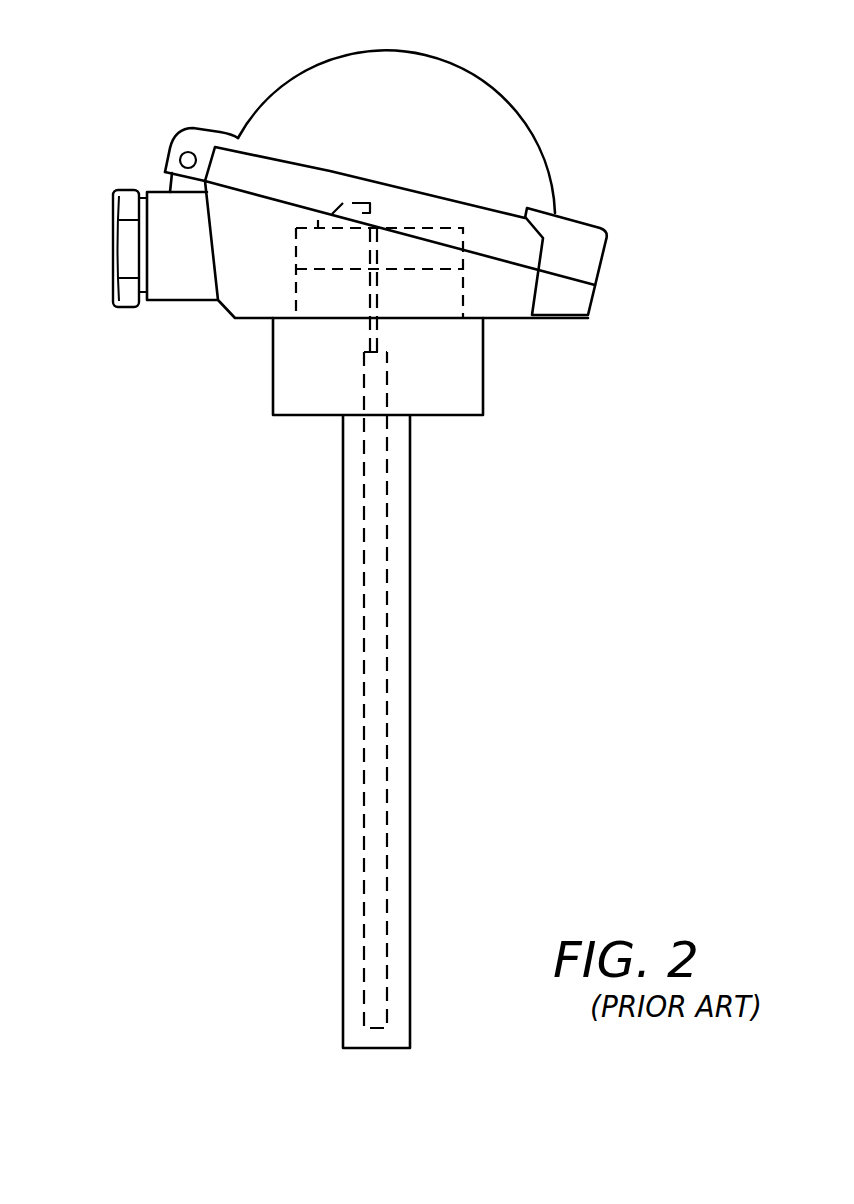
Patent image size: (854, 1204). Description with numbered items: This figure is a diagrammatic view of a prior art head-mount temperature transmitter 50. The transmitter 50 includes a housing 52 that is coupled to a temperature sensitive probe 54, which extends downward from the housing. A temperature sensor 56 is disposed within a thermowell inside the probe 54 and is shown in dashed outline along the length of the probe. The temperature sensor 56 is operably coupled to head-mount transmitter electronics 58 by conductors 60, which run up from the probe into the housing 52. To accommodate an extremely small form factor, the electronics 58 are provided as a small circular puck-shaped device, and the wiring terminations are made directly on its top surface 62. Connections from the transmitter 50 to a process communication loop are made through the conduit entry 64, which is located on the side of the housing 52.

The head-mount temperature transmitter 50 is at (635, 114).
The housing 52 is at (497, 91).
The temperature sensitive probe 54 is at (412, 522).
The temperature sensor 56 is at (388, 662).
The head-mount transmitter electronics 58 is at (465, 293).
The conductors 60 is at (373, 225).
The top surface 62 is at (423, 223).
The conduit entry 64 is at (112, 250).